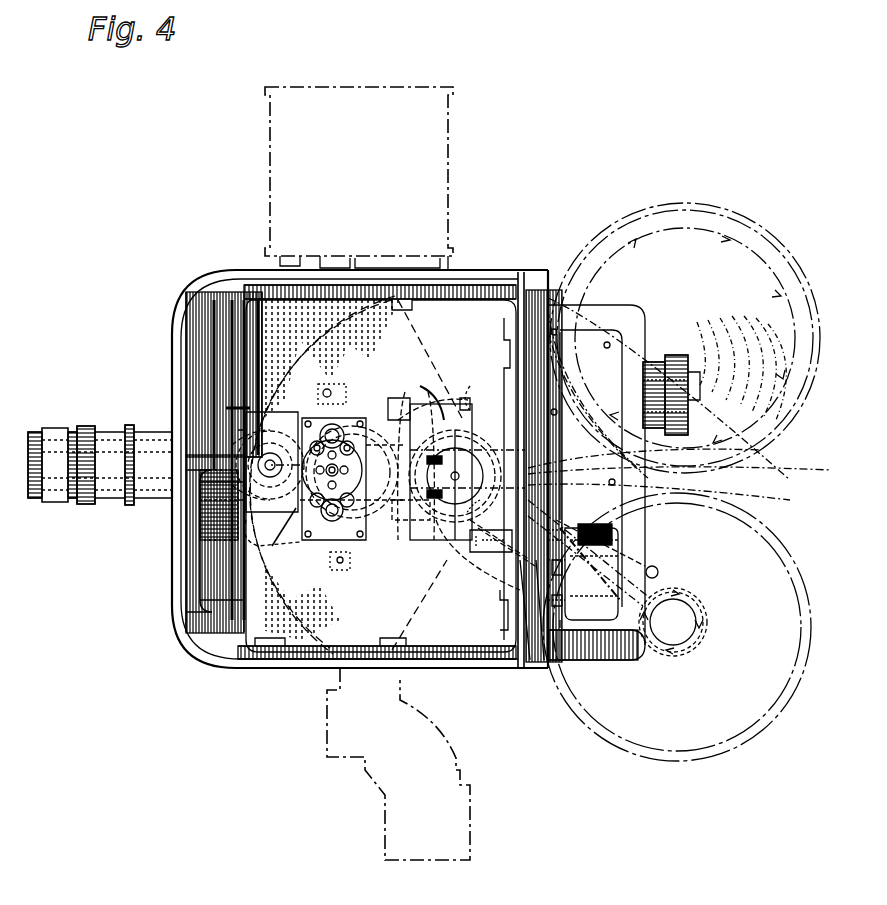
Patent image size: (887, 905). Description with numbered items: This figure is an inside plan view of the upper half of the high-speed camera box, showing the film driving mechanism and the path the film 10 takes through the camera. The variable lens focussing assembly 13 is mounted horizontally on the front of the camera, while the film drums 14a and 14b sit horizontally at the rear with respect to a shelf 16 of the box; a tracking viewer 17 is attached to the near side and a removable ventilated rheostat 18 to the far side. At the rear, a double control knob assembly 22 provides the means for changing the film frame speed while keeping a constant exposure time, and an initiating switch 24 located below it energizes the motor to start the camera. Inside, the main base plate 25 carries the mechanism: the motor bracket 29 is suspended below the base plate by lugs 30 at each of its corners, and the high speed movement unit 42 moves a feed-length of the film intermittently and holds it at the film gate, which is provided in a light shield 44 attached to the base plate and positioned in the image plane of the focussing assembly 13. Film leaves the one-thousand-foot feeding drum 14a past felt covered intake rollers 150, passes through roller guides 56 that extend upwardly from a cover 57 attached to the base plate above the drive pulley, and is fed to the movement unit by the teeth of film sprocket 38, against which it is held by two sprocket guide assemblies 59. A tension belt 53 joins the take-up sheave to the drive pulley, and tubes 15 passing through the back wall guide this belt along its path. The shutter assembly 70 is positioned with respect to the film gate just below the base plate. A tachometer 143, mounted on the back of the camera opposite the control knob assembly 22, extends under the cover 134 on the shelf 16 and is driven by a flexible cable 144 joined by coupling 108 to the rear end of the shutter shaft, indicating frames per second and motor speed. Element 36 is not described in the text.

The film 10 is at (702, 463).
The variable lens focussing assembly 13 is at (108, 500).
The feeding drum 14a is at (685, 338).
The film drum 14b is at (669, 627).
The tubes 15 is at (470, 440).
The shelf 16 is at (528, 662).
The tracking viewer 17 is at (437, 825).
The ventilated rheostat 18 is at (366, 158).
The double control knob assembly 22 is at (694, 400).
The initiating switch 24 is at (650, 478).
The main base plate 25 is at (452, 331).
The bracket 29 is at (404, 443).
The lugs 30 is at (343, 386).
The drive shaft 36 is at (300, 545).
The film sprocket 38 is at (298, 508).
The high speed movement unit 42 is at (282, 420).
The light shield 44 is at (250, 403).
The tension belt 53 is at (655, 568).
The roller guides 56 is at (431, 455).
The cover 57 is at (444, 540).
The sprocket guide assemblies 59 is at (346, 428).
The shutter assembly 70 is at (218, 476).
The coupling 108 is at (392, 520).
The cover 134 is at (580, 394).
The tachometer 143 is at (584, 572).
The flexible cable 144 is at (520, 545).
The intake rollers 150 is at (596, 420).